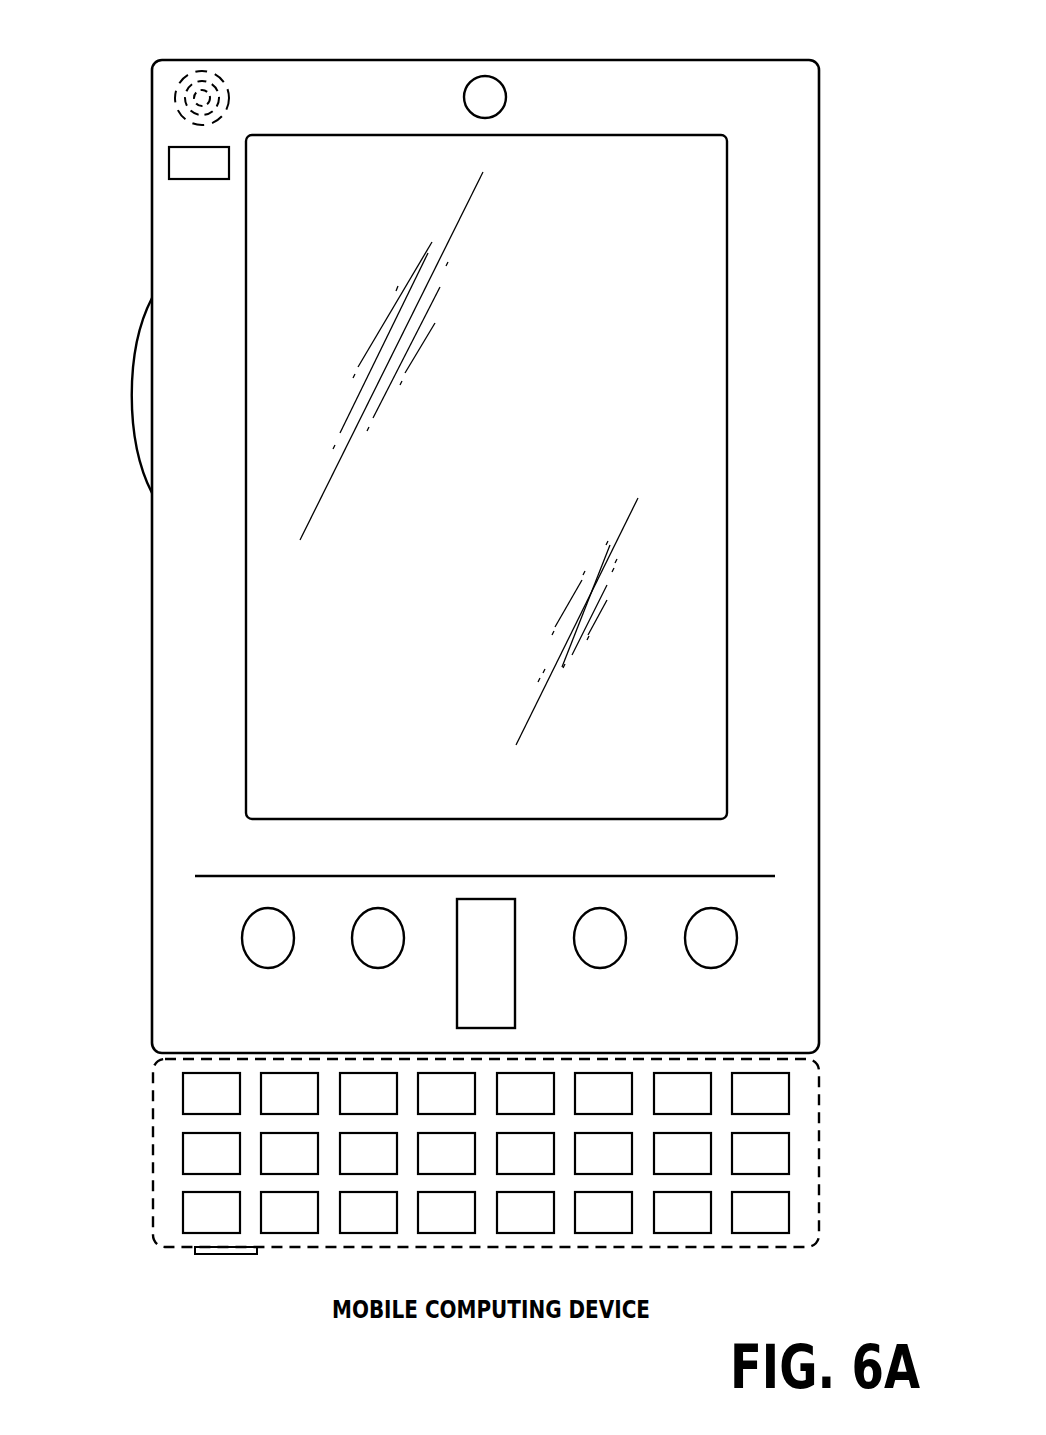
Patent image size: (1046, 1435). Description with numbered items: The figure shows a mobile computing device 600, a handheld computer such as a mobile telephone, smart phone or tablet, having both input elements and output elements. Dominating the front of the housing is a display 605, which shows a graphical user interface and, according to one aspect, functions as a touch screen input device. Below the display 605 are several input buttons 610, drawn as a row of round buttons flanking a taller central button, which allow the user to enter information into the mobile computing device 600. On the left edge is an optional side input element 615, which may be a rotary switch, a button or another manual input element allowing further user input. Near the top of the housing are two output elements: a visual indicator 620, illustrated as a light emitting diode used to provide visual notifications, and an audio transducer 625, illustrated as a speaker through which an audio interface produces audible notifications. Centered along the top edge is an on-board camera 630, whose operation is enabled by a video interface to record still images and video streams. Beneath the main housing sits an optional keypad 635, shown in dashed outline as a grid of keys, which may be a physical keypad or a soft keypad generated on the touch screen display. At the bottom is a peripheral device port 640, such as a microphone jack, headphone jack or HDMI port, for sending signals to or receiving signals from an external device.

The mobile computing device 600 is at (785, 60).
The display 605 is at (293, 653).
The input buttons 610 is at (268, 968).
The side input element 615 is at (131, 398).
The visual indicator 620 is at (169, 163).
The audio transducer 625 is at (175, 100).
The on-board camera 630 is at (487, 76).
The keypad 635 is at (162, 1151).
The peripheral device port 640 is at (200, 1256).